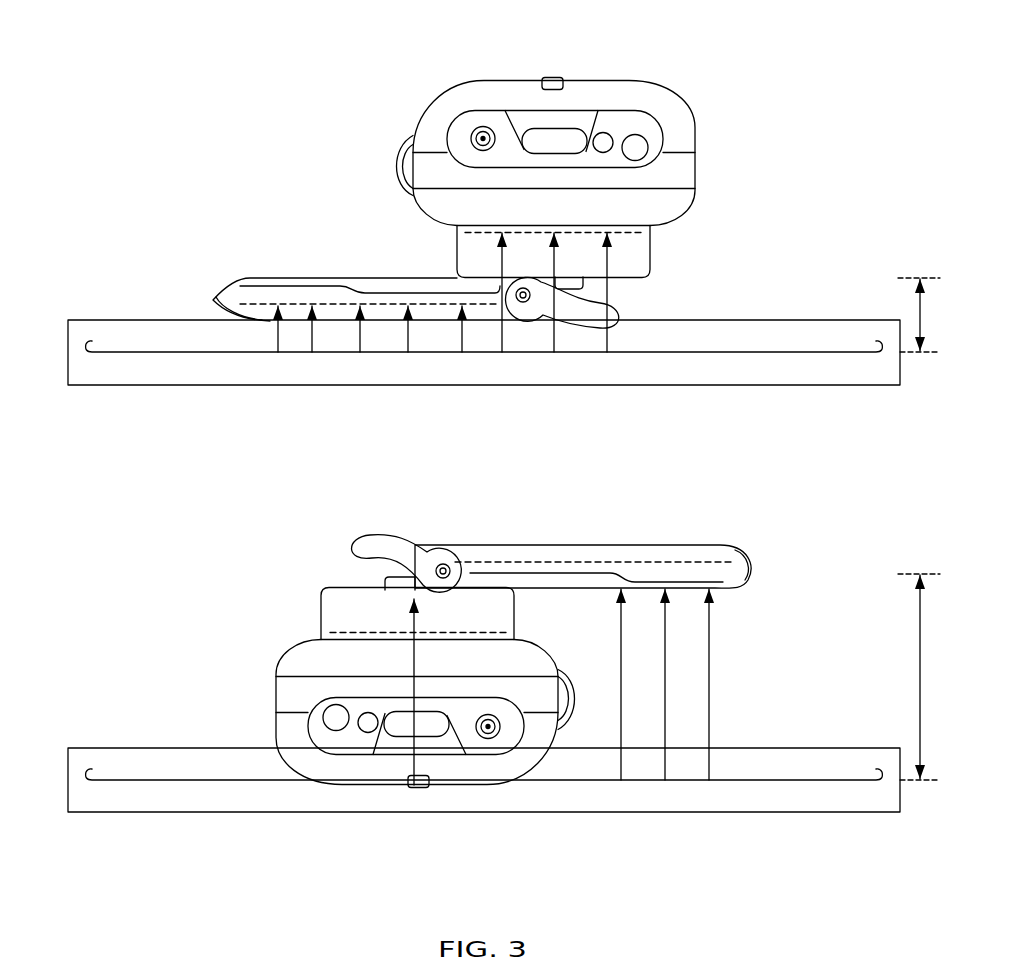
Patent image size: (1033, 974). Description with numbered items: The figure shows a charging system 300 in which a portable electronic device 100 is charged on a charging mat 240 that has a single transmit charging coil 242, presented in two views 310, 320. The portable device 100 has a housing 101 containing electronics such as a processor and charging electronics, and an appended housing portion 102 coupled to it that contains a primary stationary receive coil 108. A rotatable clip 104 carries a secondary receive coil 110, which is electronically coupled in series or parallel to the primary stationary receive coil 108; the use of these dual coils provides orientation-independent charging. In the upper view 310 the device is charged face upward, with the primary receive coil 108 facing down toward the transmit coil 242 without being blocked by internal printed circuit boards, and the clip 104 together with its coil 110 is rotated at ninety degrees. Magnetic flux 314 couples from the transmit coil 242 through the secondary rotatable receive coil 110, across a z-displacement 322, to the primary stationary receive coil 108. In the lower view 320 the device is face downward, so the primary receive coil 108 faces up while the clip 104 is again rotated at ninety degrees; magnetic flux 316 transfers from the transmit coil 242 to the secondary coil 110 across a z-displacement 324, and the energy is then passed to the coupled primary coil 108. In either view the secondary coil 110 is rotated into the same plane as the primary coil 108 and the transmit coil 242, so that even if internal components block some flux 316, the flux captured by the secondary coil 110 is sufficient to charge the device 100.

The charging system 300 is at (153, 50).
The view 310 is at (108, 285).
The view 320 is at (170, 692).
The portable electronic device 100 is at (273, 692).
The housing 101 is at (678, 108).
The appended housing portion 102 is at (457, 262).
The rotatable clip 104 is at (306, 277).
The primary stationary receive coil 108 is at (638, 236).
The secondary receive coil 110 is at (240, 300).
The magnetic flux 314 is at (610, 290).
The magnetic flux 316 is at (710, 672).
The charging mat 240 is at (772, 320).
The transmit charging coil 242 is at (845, 350).
The z-displacement 322 is at (918, 318).
The z-displacement 324 is at (920, 682).